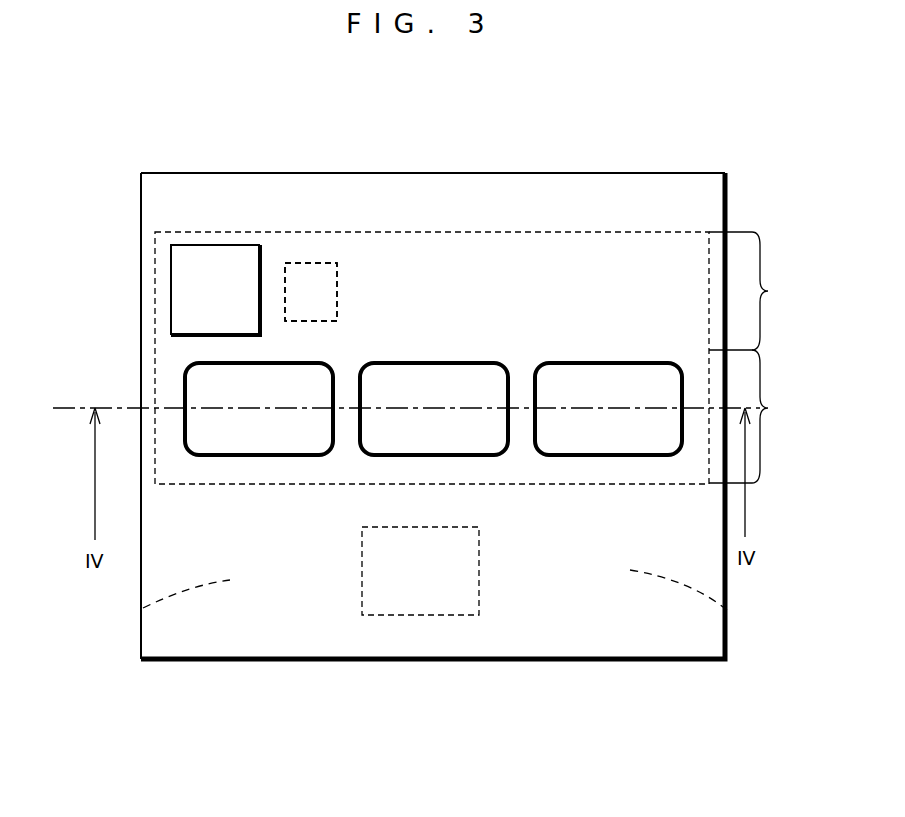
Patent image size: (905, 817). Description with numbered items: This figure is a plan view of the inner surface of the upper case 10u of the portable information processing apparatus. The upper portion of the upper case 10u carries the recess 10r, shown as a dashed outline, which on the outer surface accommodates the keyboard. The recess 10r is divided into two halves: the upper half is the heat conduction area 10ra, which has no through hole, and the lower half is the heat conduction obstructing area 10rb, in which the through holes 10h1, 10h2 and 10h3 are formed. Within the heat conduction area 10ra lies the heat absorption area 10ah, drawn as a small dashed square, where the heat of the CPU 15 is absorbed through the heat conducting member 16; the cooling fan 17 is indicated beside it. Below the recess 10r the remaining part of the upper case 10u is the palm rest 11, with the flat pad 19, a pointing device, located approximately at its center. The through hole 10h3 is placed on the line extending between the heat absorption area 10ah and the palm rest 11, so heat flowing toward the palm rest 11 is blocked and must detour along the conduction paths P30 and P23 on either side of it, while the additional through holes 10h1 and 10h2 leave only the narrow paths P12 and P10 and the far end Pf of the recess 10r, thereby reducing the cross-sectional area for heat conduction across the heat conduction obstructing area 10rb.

The upper case 10u is at (712, 110).
The recess 10r is at (155, 265).
The heat conduction area 10ra is at (761, 291).
The heat conduction obstructing area 10rb is at (761, 416).
The cooling fan 17 is at (213, 270).
The CPU 15 is at (310, 295).
The heat conducting member 16 is at (311, 292).
The heat absorption area 10ah is at (313, 297).
The through hole 10h1 is at (605, 382).
The through hole 10h2 is at (448, 380).
The through hole 10h3 is at (215, 385).
The flat pad 19 is at (418, 580).
The conduction path P30 is at (168, 393).
The far end of the recess Pf is at (147, 430).
The conduction path P10 is at (695, 393).
The conduction path P23 is at (343, 427).
The conduction path P12 is at (520, 435).
The palm rest 11 is at (143, 608).